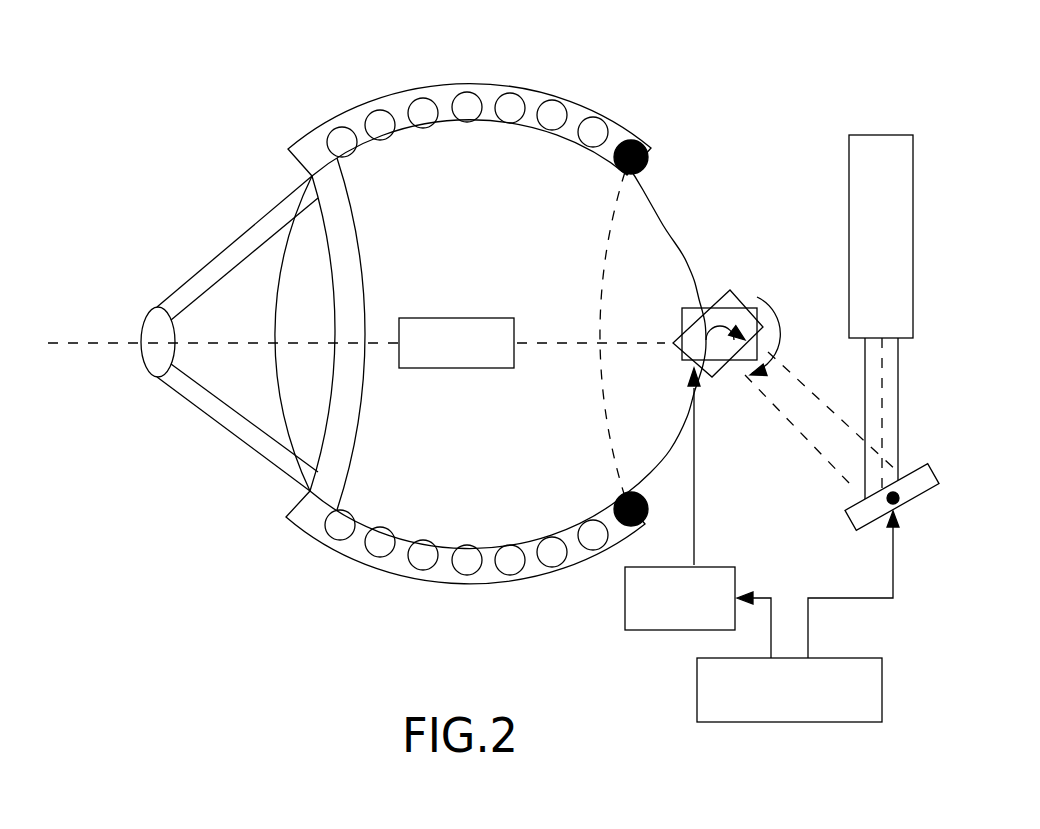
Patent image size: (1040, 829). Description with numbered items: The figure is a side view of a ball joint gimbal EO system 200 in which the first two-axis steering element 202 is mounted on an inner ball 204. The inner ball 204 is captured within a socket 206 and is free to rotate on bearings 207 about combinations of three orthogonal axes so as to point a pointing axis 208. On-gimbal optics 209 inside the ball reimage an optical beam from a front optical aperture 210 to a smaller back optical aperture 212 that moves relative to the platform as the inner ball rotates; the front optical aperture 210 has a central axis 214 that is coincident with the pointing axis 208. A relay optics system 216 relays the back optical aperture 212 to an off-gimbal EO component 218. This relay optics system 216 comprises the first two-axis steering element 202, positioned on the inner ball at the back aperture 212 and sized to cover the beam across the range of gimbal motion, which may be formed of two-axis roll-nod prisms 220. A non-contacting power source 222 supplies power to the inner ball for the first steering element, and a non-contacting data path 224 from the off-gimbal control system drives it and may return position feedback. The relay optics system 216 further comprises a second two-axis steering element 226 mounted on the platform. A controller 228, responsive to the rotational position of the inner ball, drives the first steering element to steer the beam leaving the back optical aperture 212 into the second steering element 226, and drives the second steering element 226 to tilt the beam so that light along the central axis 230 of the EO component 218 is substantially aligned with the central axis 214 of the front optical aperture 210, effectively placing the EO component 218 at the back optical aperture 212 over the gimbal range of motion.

The ball joint gimbal EO system 200 is at (134, 124).
The first two-axis steering element 202 is at (749, 234).
The inner ball 204 is at (680, 236).
The socket 206 is at (592, 106).
The bearings 207 is at (513, 102).
The pointing axis 208 is at (72, 340).
The on-gimbal optics 209 is at (455, 318).
The front optical aperture 210 is at (291, 215).
The back optical aperture 212 is at (677, 302).
The central axis 214 is at (299, 340).
The relay optics system 216 is at (807, 498).
The EO component 218 is at (913, 240).
The two-axis roll-nod prisms 220 is at (758, 297).
The non-contacting power source 222 is at (710, 114).
The non-contacting data path 224 is at (625, 607).
The second two-axis steering element 226 is at (928, 509).
The controller 228 is at (882, 672).
The central axis 230 is at (898, 382).